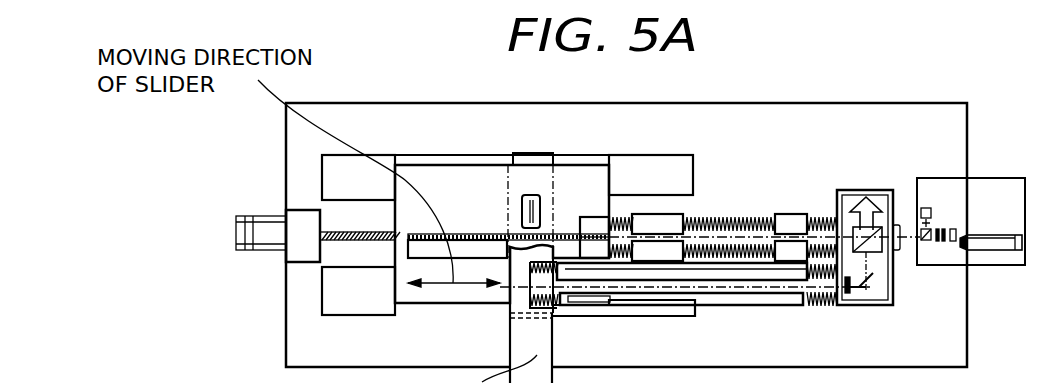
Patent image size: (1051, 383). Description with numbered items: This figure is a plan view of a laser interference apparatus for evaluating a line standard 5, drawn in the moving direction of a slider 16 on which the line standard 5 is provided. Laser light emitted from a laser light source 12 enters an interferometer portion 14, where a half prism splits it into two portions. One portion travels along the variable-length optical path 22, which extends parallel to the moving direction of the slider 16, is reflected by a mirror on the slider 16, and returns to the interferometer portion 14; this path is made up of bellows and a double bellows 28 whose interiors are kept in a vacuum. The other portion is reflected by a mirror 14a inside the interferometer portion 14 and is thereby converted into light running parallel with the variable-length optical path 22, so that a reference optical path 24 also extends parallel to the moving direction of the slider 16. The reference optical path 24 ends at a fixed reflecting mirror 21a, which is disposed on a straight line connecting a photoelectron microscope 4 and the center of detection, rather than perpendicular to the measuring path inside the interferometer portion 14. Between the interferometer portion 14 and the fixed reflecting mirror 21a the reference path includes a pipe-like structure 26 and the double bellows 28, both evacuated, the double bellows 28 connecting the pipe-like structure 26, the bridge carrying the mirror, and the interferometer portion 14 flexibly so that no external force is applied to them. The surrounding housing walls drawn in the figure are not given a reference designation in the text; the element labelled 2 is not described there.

The housing 2 is at (337, 285).
The photoelectron microscope 4 is at (521, 206).
The line standard 5 is at (463, 232).
The laser light source 12 is at (1000, 250).
The interferometer portion 14 is at (867, 190).
The mirror 14a is at (870, 300).
The slider 16 is at (435, 302).
The fixed reflecting mirror 21a is at (522, 285).
The variable-length optical path 22 is at (722, 222).
The reference optical path 24 is at (738, 283).
The pipe-like structure 26 is at (650, 297).
The double bellows 28 is at (620, 215).